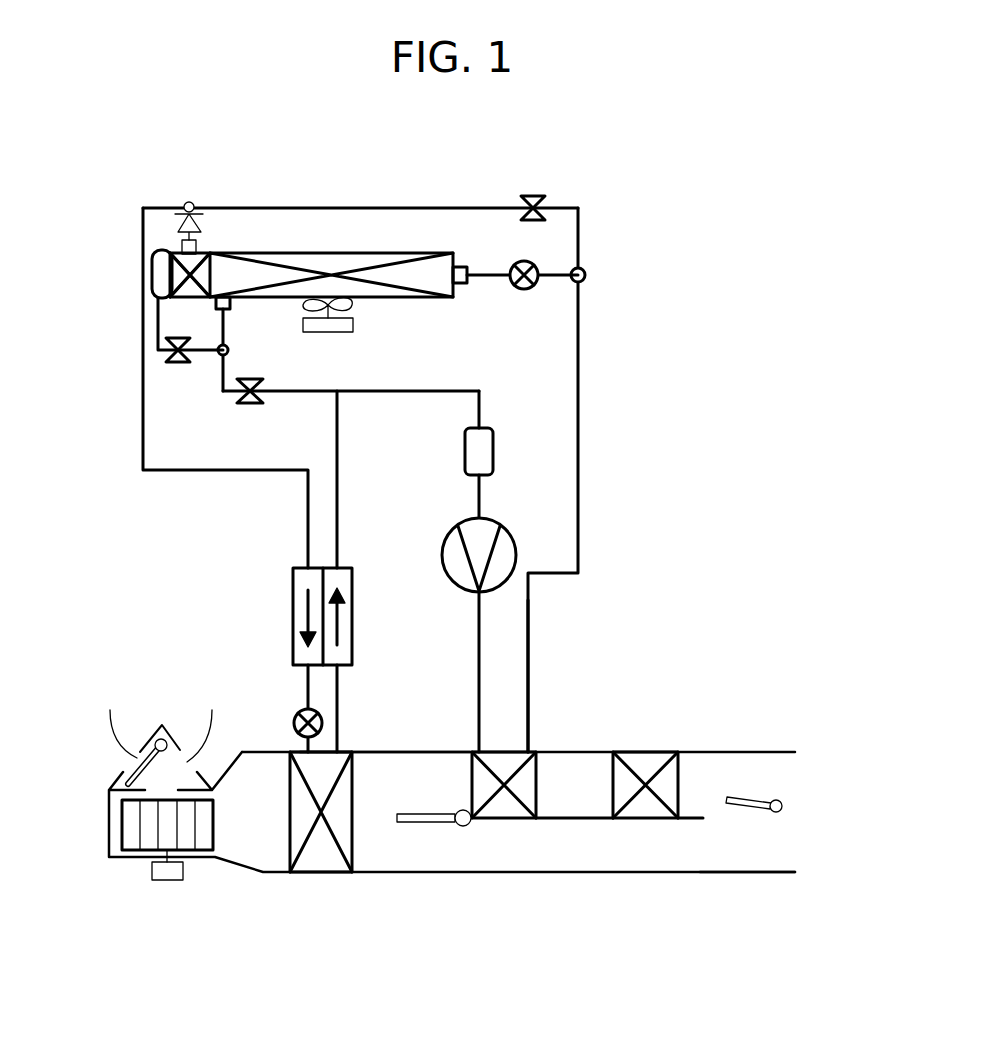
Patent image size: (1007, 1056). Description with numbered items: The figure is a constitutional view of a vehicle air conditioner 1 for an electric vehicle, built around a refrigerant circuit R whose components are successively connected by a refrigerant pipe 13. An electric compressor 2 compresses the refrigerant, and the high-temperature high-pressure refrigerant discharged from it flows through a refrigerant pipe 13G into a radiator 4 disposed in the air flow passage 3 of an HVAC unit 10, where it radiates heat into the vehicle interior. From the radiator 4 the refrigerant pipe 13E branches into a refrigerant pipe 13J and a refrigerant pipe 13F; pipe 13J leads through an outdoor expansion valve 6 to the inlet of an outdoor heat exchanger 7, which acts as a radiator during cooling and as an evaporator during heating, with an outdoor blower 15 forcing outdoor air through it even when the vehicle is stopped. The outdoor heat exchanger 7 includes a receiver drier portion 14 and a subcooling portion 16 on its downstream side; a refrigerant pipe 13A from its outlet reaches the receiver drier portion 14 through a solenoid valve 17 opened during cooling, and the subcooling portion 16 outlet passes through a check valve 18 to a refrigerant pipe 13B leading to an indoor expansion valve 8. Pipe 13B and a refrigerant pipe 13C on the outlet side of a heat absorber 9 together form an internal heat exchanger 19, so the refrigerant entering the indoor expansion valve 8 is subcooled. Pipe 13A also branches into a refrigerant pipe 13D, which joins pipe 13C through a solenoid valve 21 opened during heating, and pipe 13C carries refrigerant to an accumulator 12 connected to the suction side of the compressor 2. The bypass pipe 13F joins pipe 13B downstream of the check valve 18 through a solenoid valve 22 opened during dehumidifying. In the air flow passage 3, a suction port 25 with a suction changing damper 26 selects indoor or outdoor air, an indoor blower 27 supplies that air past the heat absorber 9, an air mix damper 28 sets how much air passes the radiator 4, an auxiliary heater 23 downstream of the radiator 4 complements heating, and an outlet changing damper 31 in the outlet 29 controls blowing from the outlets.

The vehicle air conditioner 1 is at (662, 372).
The compressor 2 is at (442, 552).
The air flow passage 3 is at (400, 770).
The radiator 4 is at (538, 785).
The outdoor expansion valve 6 is at (524, 290).
The outdoor heat exchanger 7 is at (310, 253).
The indoor expansion valve 8 is at (294, 723).
The heat absorber 9 is at (355, 835).
The HVAC unit 10 is at (438, 752).
The accumulator 12 is at (495, 448).
The refrigerant pipe 13 is at (586, 340).
The refrigerant pipe 13A is at (230, 350).
The refrigerant pipe 13B is at (307, 512).
The refrigerant pipe 13C is at (340, 430).
The refrigerant pipe 13D is at (297, 395).
The refrigerant pipe 13E is at (530, 630).
The refrigerant pipe 13F is at (360, 207).
The refrigerant pipe 13G is at (478, 630).
The refrigerant pipe 13J is at (495, 270).
The receiver drier portion 14 is at (150, 270).
The outdoor blower 15 is at (355, 305).
The subcooling portion 16 is at (200, 253).
The solenoid valve 17 is at (180, 368).
The check valve 18 is at (180, 225).
The internal heat exchanger 19 is at (292, 615).
The solenoid valve 21 is at (250, 406).
The solenoid valve 22 is at (540, 198).
The auxiliary heater 23 is at (680, 780).
The suction port 25 is at (187, 762).
The suction changing damper 26 is at (135, 760).
The indoor blower 27 is at (122, 825).
The air mix damper 28 is at (432, 812).
The outlet 29 is at (780, 838).
The outlet changing damper 31 is at (743, 806).
The refrigerant circuit R is at (207, 523).